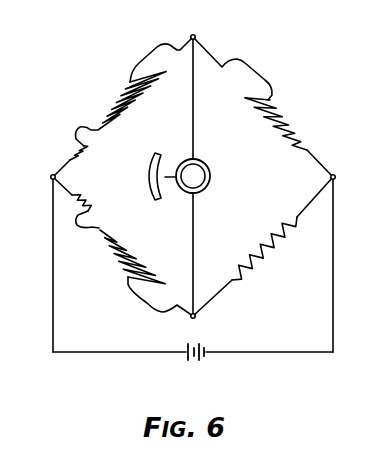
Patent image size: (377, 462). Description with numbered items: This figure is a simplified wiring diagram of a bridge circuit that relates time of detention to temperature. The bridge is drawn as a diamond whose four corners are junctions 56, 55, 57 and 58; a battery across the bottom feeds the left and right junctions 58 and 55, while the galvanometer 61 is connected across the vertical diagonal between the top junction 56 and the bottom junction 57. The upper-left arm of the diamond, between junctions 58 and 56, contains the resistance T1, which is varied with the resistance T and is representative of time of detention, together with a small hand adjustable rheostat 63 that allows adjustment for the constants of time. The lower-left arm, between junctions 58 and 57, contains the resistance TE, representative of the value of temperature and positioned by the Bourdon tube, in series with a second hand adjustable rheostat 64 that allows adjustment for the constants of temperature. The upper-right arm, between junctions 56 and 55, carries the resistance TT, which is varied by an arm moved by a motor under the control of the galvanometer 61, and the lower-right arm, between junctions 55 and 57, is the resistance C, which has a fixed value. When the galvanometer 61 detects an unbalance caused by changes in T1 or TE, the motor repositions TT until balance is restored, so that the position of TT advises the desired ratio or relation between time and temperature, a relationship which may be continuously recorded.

The bridge junction terminal 55 is at (345, 179).
The bridge junction terminal 56 is at (202, 30).
The bridge junction terminal 57 is at (203, 323).
The bridge junction terminal 58 is at (37, 179).
The galvanometer 61 is at (208, 162).
The hand adjustable rheostat 63 is at (91, 153).
The hand adjustable rheostat 64 is at (89, 199).
The resistance T1 is at (132, 98).
The resistance TT is at (276, 113).
The resistance TE is at (129, 260).
The resistance C is at (264, 248).